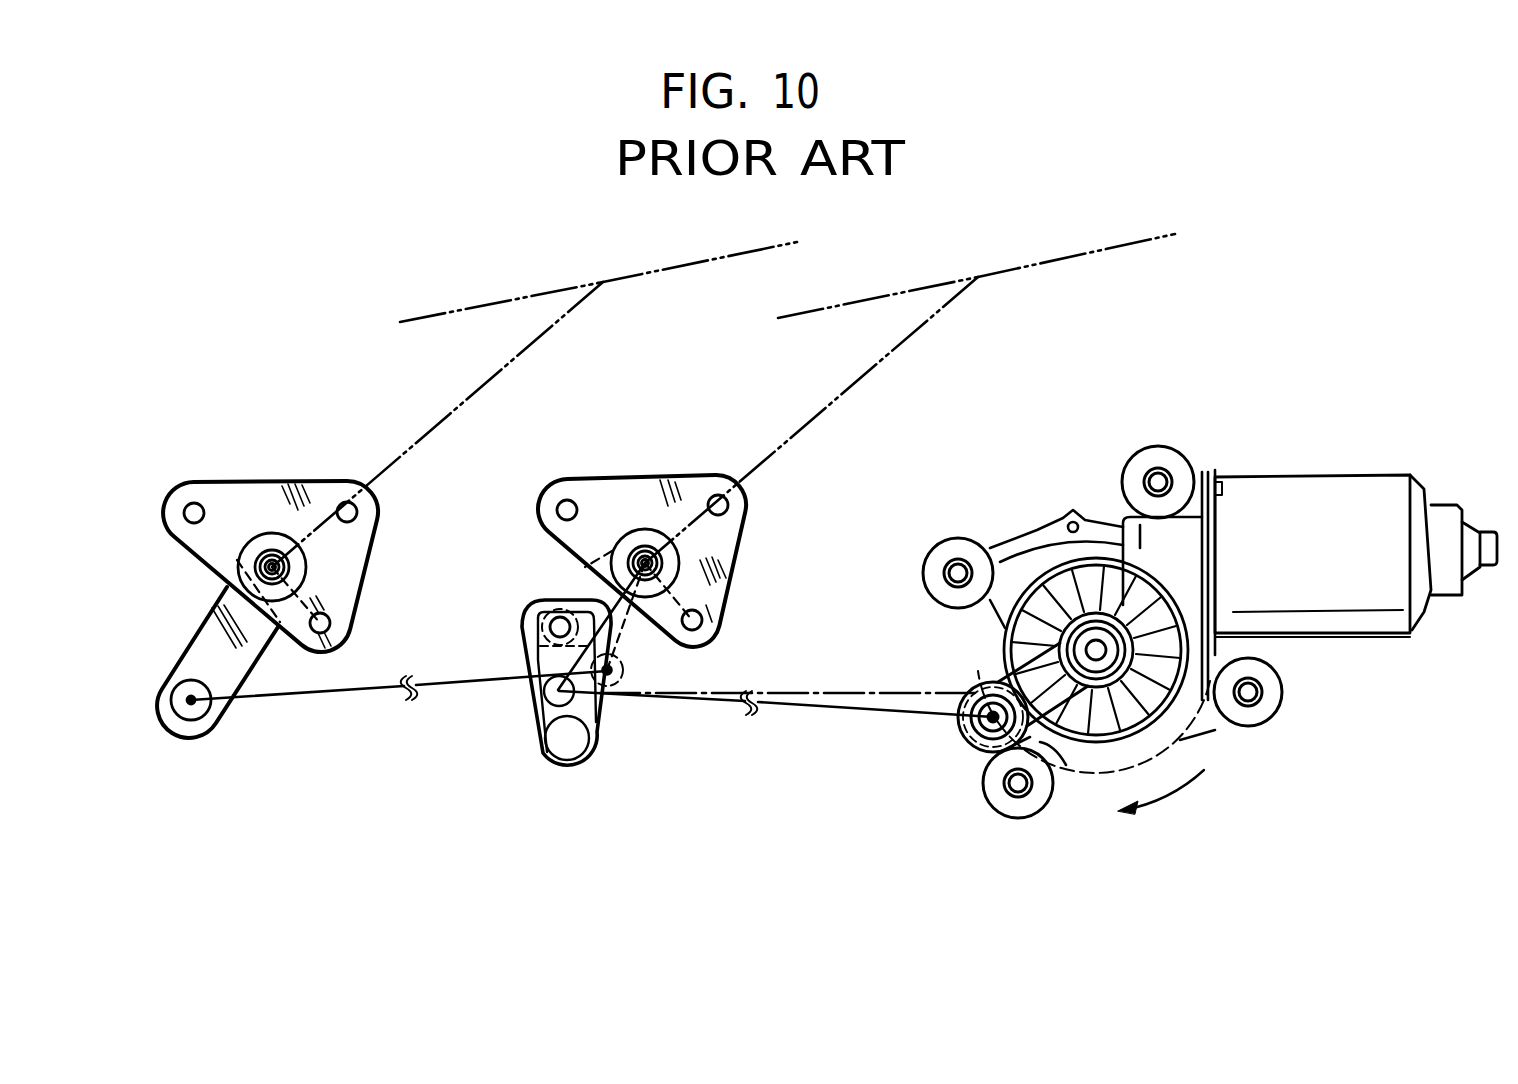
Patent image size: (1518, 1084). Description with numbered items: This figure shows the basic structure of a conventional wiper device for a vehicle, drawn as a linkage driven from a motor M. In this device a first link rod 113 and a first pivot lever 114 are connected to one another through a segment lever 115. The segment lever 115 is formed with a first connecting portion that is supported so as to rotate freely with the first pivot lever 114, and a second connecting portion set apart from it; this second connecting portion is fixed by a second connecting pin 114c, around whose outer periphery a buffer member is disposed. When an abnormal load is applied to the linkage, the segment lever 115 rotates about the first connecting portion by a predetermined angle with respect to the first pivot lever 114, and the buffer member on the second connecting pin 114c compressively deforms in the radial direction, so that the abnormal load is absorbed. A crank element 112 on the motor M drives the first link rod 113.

The crank arm 112 is at (1070, 758).
The link rod 113 is at (805, 707).
The pivot bracket 114 is at (572, 578).
The pivot pin 114c is at (550, 627).
The lever arm 115 is at (528, 648).
The motor M is at (1308, 472).